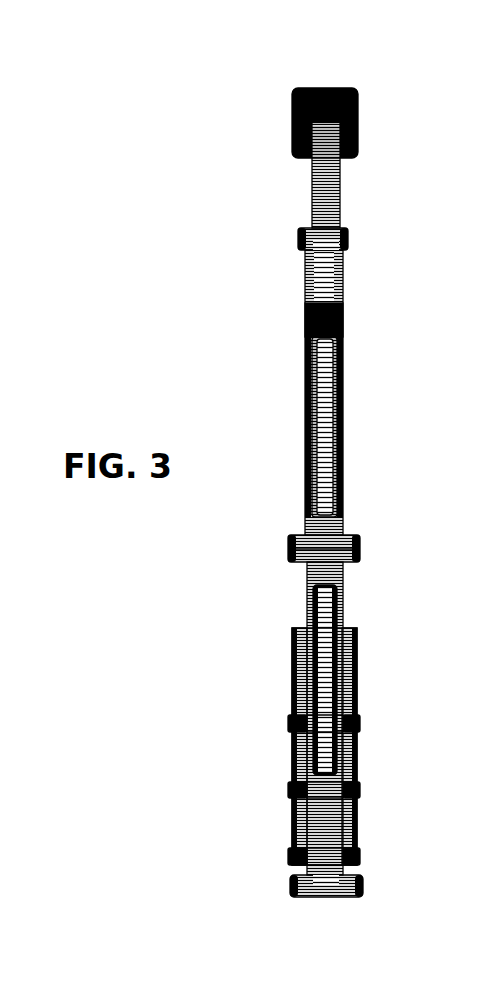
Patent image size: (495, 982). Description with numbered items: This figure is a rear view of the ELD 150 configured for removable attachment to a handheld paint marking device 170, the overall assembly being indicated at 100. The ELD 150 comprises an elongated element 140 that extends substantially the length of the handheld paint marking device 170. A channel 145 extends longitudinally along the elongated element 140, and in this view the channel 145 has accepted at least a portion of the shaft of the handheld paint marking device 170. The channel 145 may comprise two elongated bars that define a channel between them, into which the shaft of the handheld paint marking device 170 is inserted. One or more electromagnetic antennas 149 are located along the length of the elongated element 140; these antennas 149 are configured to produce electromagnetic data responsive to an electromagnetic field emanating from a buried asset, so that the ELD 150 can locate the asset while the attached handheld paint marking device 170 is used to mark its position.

The device assembly 100 is at (240, 83).
The elongated element 140 is at (345, 281).
The channel 145 is at (331, 402).
The electromagnetic antennas 149 is at (348, 231).
The ELD 150 is at (304, 293).
The handheld paint marking device 170 is at (331, 461).